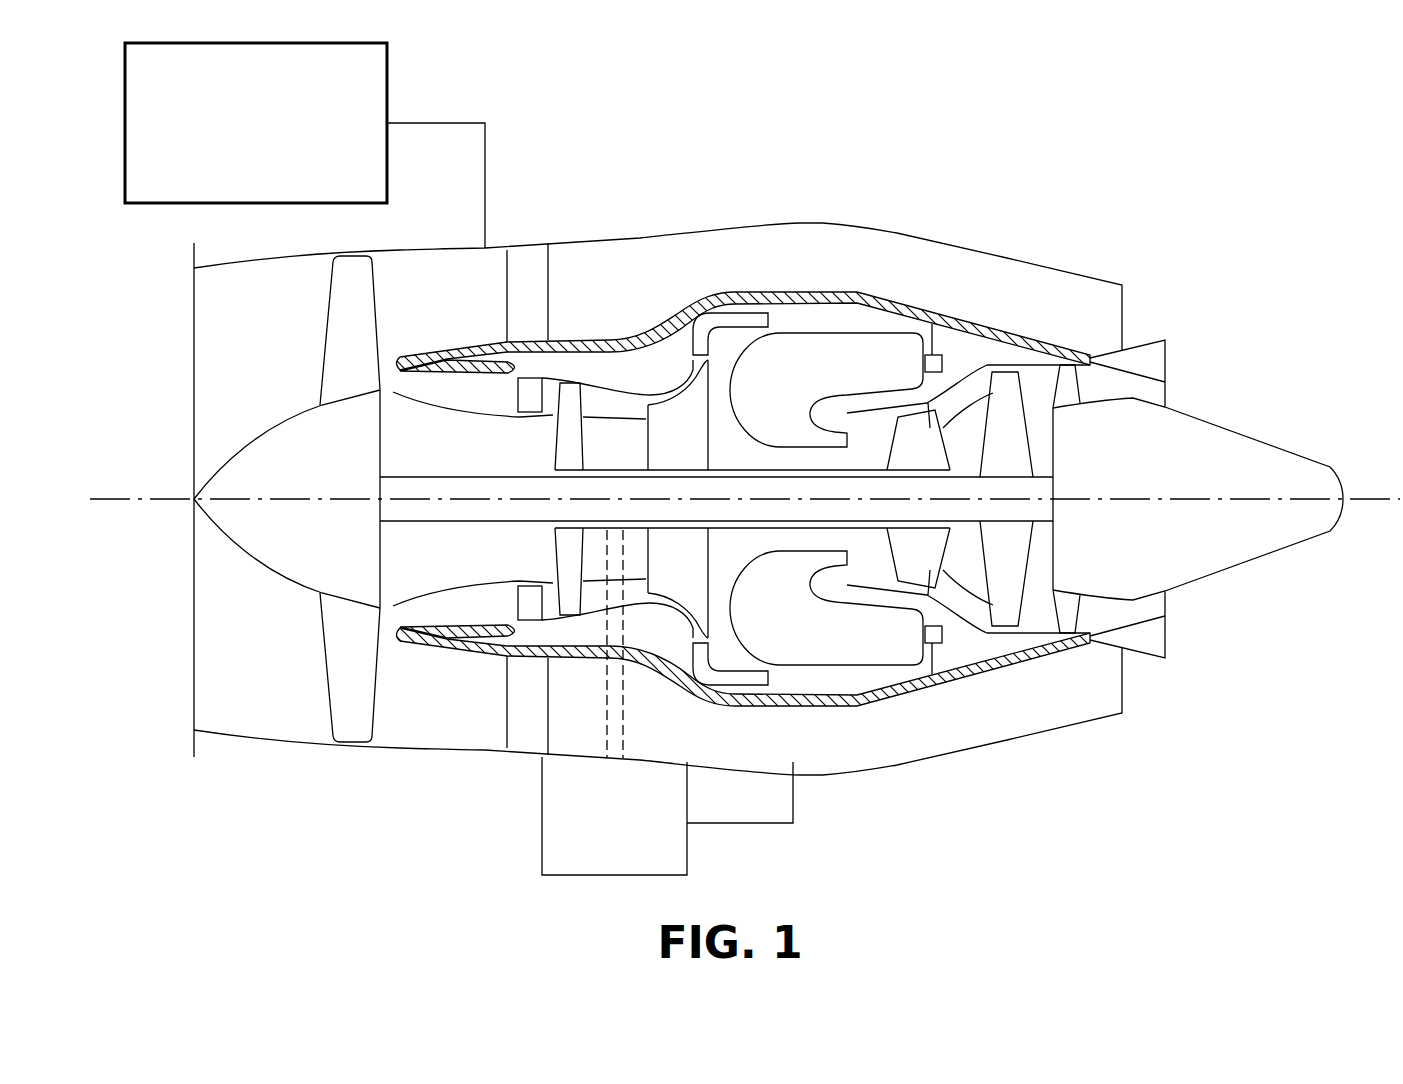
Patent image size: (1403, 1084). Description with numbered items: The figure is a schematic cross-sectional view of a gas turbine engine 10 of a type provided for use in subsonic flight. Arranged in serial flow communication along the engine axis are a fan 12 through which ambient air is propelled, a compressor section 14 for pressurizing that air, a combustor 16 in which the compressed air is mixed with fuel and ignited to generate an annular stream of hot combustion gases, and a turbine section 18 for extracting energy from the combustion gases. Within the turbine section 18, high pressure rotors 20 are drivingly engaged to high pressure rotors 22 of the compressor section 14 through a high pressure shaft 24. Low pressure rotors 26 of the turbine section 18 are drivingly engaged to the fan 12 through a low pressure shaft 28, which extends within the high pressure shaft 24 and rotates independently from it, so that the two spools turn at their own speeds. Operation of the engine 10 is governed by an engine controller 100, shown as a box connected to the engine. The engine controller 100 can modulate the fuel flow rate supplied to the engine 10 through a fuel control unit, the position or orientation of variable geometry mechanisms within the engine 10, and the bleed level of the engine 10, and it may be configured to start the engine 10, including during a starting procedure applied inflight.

The gas turbine engine 10 is at (977, 182).
The fan 12 is at (352, 663).
The compressor section 14 is at (605, 398).
The combustor 16 is at (828, 357).
The turbine section 18 is at (963, 568).
The high pressure rotor of the turbine section 20 is at (1007, 425).
The high pressure rotor of the compressor section 22 is at (680, 422).
The high pressure shaft 24 is at (832, 470).
The low pressure rotor of the turbine section 26 is at (1010, 372).
The low pressure shaft 28 is at (442, 522).
The engine controller 100 is at (226, 176).